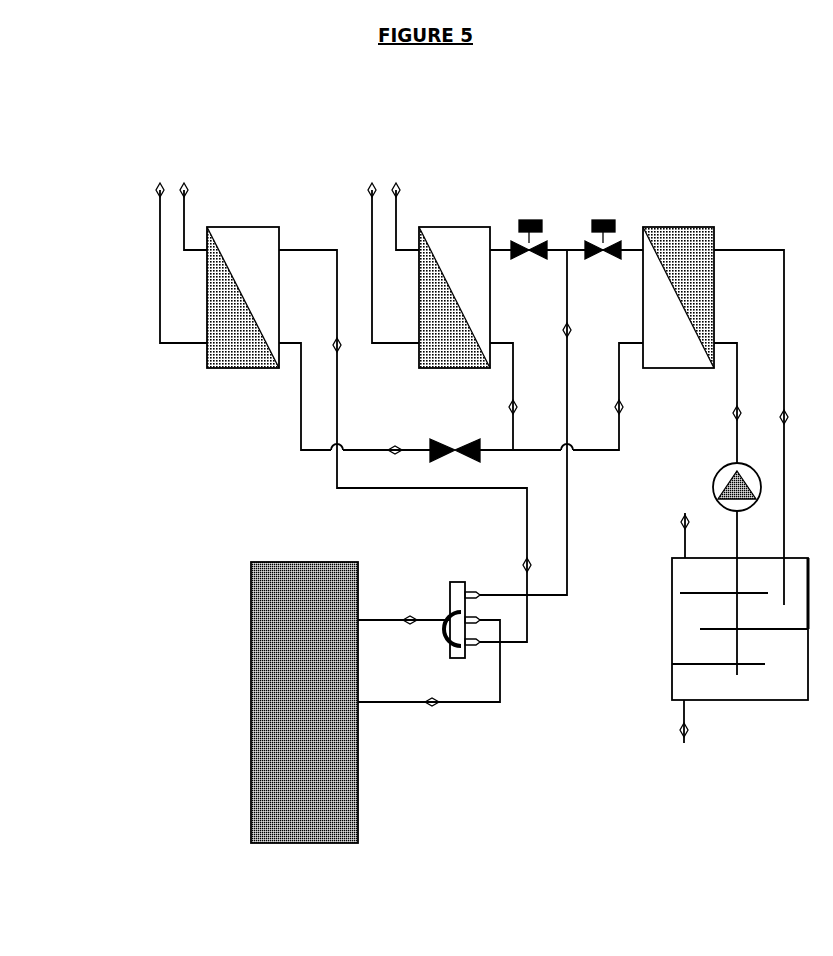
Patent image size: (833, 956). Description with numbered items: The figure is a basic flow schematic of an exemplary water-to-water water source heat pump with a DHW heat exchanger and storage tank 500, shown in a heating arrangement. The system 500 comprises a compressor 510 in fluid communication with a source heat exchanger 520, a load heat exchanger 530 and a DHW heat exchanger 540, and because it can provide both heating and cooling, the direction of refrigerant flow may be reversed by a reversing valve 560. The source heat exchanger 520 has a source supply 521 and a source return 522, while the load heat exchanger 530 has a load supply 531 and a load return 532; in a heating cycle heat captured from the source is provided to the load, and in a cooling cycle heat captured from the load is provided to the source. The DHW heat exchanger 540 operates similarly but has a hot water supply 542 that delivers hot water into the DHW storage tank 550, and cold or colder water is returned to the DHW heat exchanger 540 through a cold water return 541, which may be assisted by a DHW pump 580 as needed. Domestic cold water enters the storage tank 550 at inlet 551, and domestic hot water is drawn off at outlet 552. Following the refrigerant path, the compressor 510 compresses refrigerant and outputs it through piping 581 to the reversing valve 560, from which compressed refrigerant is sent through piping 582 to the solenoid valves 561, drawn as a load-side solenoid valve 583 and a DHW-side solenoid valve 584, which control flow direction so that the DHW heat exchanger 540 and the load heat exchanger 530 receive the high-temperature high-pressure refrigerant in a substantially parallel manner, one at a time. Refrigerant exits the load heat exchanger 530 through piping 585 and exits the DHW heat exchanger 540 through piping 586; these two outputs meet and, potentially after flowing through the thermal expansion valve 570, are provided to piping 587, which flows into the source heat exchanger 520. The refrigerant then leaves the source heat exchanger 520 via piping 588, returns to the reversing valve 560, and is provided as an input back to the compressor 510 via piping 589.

The water-to-water WSHP system 500 is at (516, 70).
The compressor 510 is at (300, 678).
The source heat exchanger 520 is at (245, 275).
The source supply 521 is at (188, 203).
The source return 522 is at (167, 250).
The load heat exchanger 530 is at (454, 275).
The load supply 531 is at (403, 203).
The load return 532 is at (381, 250).
The DHW heat exchanger 540 is at (678, 275).
The cold water return 541 is at (746, 500).
The hot water supply 542 is at (768, 427).
The DHW storage tank 550 is at (749, 665).
The domestic cold water inlet 551 is at (662, 745).
The domestic hot water outlet 552 is at (660, 527).
The reversing valve 560 is at (450, 583).
The solenoid valves 561 is at (566, 200).
The thermal expansion valve 570 is at (455, 433).
The DHW pump 580 is at (710, 458).
The piping 581 is at (404, 643).
The piping 582 is at (541, 422).
The load solenoid valve 583 is at (505, 268).
The DHW solenoid valve 584 is at (627, 268).
The piping 585 is at (516, 396).
The piping 586 is at (578, 396).
The piping 587 is at (348, 398).
The piping 588 is at (405, 446).
The piping 589 is at (429, 686).